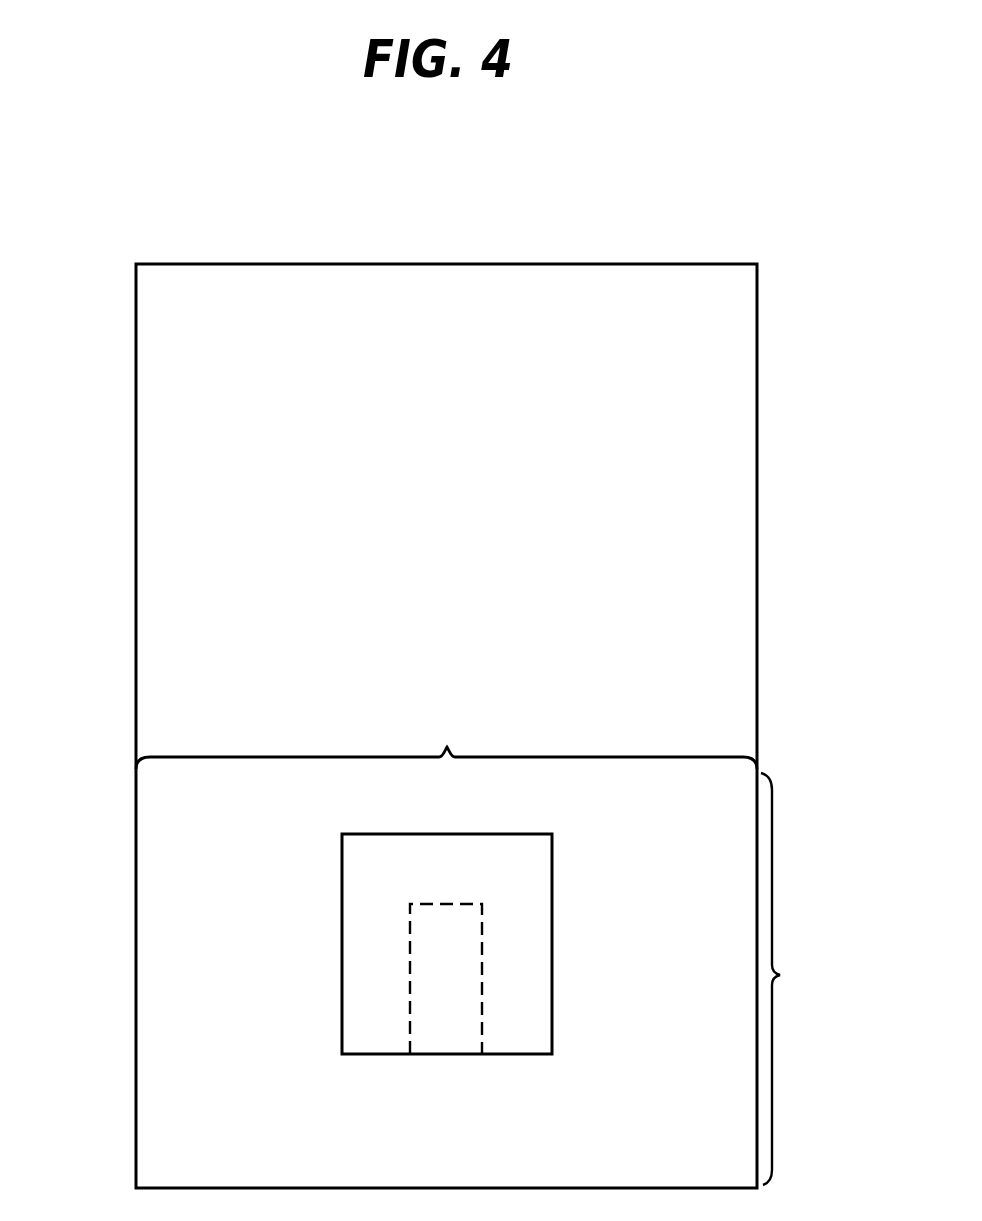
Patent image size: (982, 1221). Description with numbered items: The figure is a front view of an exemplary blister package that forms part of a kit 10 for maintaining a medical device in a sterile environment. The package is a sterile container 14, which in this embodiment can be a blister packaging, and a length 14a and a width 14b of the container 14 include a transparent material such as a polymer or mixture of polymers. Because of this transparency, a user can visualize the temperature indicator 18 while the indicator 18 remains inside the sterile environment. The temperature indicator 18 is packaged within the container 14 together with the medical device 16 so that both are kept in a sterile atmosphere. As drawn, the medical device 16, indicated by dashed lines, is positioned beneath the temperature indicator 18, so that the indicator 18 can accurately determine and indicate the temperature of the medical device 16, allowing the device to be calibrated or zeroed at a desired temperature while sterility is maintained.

The kit 10 is at (131, 222).
The container 14 is at (757, 517).
The length of the container 14a is at (795, 979).
The width of the container 14b is at (446, 741).
The medical device 16 is at (486, 899).
The temperature indicator 18 is at (475, 834).